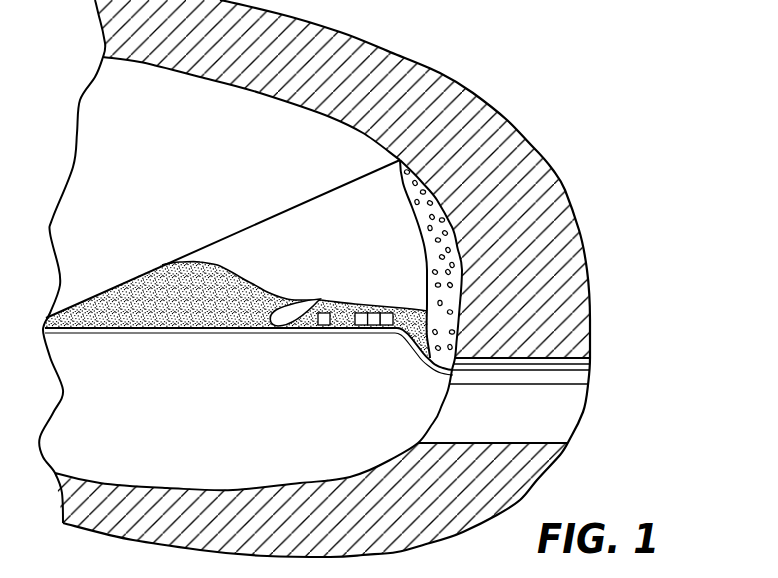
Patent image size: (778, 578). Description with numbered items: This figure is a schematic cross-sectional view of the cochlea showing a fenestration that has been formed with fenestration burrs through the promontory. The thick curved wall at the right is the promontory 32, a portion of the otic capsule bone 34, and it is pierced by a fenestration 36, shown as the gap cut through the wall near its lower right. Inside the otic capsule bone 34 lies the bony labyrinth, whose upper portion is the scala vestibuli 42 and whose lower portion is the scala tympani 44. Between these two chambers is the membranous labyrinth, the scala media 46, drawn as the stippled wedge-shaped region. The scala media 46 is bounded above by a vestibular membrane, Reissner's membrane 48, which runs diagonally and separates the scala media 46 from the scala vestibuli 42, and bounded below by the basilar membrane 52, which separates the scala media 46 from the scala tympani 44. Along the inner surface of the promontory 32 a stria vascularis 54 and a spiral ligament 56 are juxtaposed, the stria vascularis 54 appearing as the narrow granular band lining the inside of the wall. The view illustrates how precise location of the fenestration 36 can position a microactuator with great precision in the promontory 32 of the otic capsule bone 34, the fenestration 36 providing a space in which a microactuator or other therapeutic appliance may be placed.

The promontory 32 is at (374, 278).
The otic capsule bone 34 is at (590, 257).
The fenestration 36 is at (578, 398).
The scala vestibuli 42 is at (249, 188).
The scala tympani 44 is at (270, 422).
The scala media 46 is at (176, 313).
The Reissner's membrane 48 is at (223, 242).
The basilar membrane 52 is at (197, 333).
The stria vascularis 54 is at (425, 230).
The spiral ligament 56 is at (462, 235).